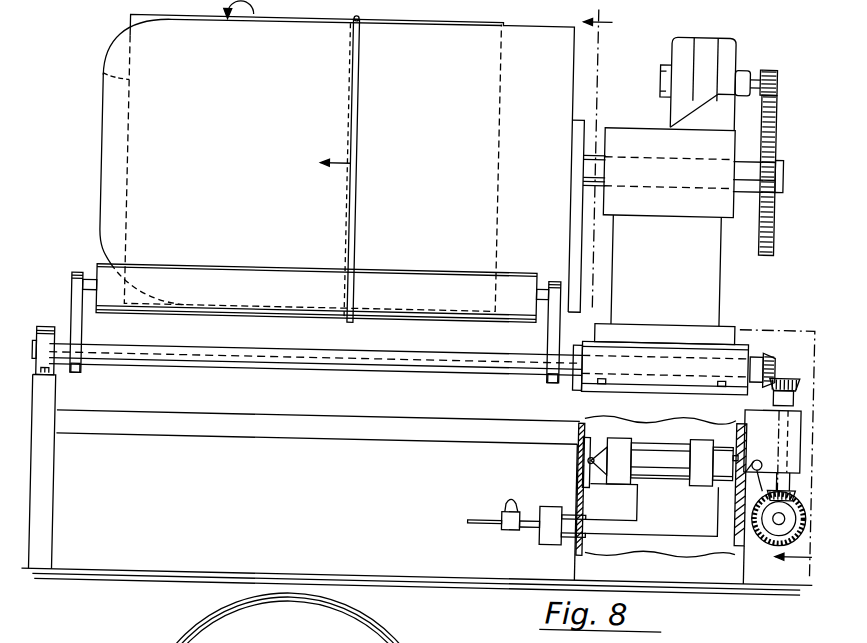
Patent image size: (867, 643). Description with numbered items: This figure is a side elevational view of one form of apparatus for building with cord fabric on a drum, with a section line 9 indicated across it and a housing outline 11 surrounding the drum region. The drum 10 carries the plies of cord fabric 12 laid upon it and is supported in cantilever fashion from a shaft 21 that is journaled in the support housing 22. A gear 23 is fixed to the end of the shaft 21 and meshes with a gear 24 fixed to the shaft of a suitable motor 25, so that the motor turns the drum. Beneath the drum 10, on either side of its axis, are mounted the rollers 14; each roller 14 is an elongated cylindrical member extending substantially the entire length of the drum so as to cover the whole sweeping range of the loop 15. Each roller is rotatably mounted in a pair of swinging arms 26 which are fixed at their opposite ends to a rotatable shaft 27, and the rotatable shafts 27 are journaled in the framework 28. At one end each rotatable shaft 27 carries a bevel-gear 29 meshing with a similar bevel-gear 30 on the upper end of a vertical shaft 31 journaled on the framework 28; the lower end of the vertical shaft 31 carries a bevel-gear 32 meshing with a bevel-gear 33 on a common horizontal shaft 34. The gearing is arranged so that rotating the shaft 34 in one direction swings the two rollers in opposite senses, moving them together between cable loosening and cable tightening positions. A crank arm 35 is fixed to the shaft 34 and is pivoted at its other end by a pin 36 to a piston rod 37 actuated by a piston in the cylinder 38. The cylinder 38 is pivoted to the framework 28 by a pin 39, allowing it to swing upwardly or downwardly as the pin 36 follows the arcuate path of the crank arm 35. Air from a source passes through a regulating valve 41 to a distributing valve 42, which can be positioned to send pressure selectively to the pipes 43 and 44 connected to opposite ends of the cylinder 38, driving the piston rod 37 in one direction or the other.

The section line 9 is at (607, 159).
The drum 10 is at (98, 150).
The drum housing 11 is at (154, 30).
The plies of cord fabric 12 is at (98, 84).
The rollers 14 is at (180, 319).
The loop 15 is at (355, 70).
The shaft 21 is at (804, 151).
The support housing 22 is at (641, 111).
The gear 23 is at (771, 105).
The gear 24 is at (784, 57).
The motor 25 is at (666, 48).
The swinging arms 26 is at (82, 338).
The rotatable shaft 27 is at (239, 373).
The framework 28 is at (56, 400).
The bevel-gear 29 is at (767, 346).
The bevel-gear 30 is at (786, 371).
The vertical shaft 31 is at (675, 375).
The bevel-gear 32 is at (775, 490).
The bevel-gear 33 is at (781, 525).
The horizontal shaft 34 is at (783, 520).
The crank arm 35 is at (755, 465).
The pin 36 is at (786, 405).
The piston rod 37 is at (738, 449).
The cylinder 38 is at (672, 475).
The pin 39 is at (591, 459).
The regulating valve 41 is at (504, 529).
The distributing valve 42 is at (550, 538).
The pipe 43 is at (651, 509).
The pipe 44 is at (605, 537).